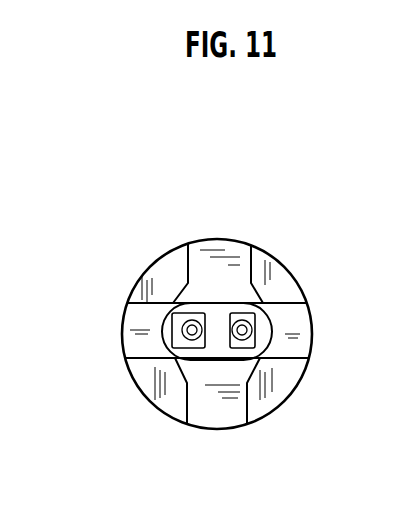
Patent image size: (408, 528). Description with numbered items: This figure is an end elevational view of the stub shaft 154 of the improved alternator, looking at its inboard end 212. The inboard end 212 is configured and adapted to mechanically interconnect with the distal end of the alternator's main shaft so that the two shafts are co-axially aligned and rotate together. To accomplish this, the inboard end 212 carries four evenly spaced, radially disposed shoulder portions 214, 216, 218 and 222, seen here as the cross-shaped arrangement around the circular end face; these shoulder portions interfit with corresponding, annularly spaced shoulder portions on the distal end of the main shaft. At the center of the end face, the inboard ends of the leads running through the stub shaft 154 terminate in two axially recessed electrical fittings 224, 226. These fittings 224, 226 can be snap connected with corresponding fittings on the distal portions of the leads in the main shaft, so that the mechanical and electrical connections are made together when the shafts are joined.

The stub shaft 154 is at (204, 230).
The inboard end 212 is at (146, 403).
The shoulder portion 214 is at (225, 265).
The shoulder portion 216 is at (292, 337).
The shoulder portion 218 is at (222, 408).
The shoulder portion 222 is at (135, 335).
The electrical fitting 224 is at (181, 317).
The electrical fitting 226 is at (251, 317).